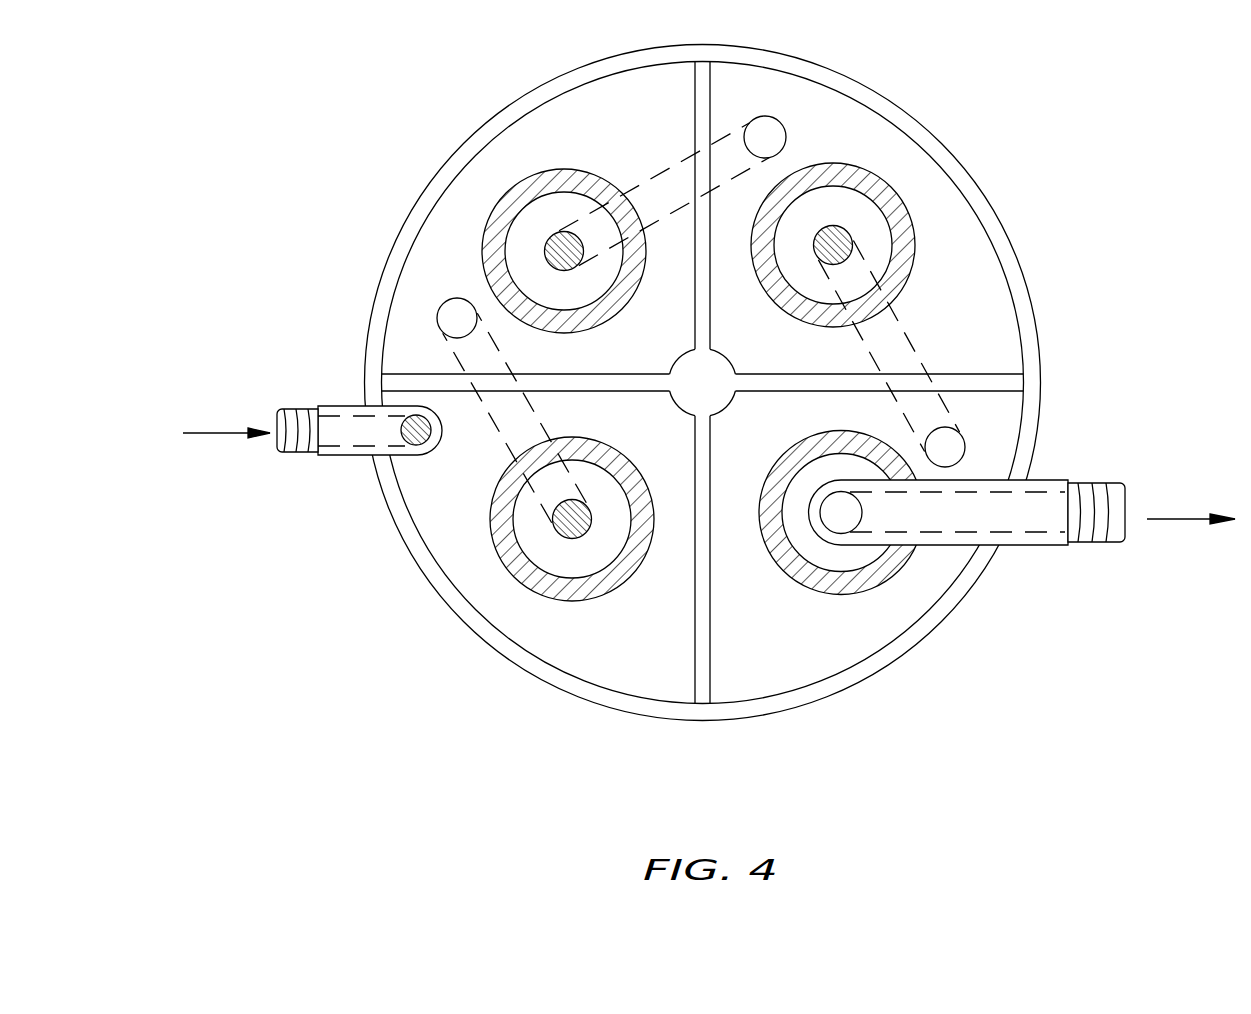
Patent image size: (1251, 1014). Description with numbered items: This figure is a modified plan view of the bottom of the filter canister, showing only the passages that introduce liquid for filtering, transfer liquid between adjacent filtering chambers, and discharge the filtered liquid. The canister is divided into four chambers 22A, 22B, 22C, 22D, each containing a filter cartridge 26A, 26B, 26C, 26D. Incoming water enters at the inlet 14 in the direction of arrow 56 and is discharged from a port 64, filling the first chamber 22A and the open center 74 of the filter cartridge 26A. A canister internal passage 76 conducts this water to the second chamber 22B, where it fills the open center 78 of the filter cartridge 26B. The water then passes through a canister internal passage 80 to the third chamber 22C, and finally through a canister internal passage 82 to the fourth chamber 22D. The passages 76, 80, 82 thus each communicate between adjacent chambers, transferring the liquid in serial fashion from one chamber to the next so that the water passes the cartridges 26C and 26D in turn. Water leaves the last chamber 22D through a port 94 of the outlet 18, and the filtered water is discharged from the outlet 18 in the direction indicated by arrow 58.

The inlet 14 is at (352, 406).
The outlet 18 is at (1016, 545).
The chamber 22A is at (655, 655).
The chamber 22B is at (468, 288).
The chamber 22C is at (783, 347).
The chamber 22D is at (785, 655).
The filter cartridge 26A is at (514, 577).
The filter cartridge 26B is at (513, 187).
The filter cartridge 26C is at (874, 173).
The filter cartridge 26D is at (862, 592).
The arrow 56 is at (232, 432).
The arrow 58 is at (1184, 519).
The port 64 is at (424, 445).
The open center 74 is at (627, 534).
The canister internal passage 76 is at (529, 403).
The open center 78 is at (542, 272).
The canister internal passage 80 is at (655, 179).
The canister internal passage 82 is at (902, 334).
The port 94 is at (862, 513).